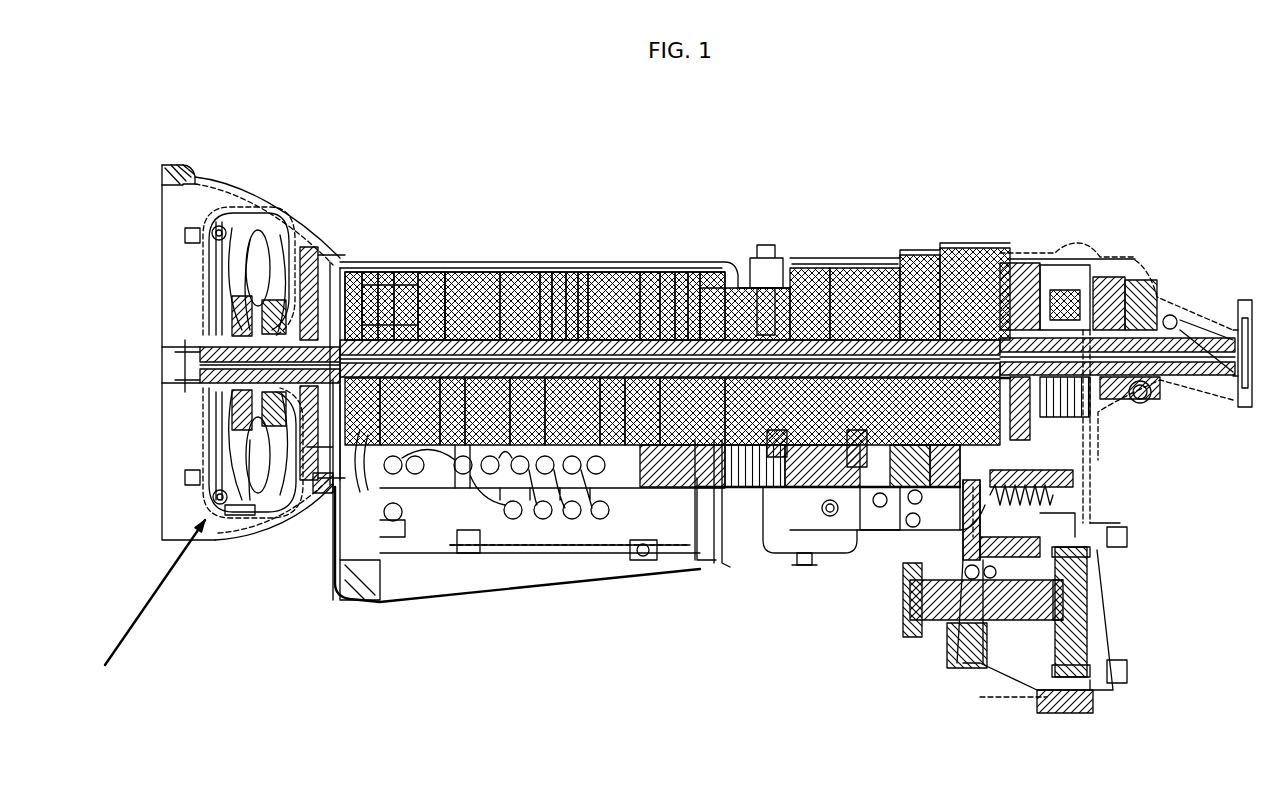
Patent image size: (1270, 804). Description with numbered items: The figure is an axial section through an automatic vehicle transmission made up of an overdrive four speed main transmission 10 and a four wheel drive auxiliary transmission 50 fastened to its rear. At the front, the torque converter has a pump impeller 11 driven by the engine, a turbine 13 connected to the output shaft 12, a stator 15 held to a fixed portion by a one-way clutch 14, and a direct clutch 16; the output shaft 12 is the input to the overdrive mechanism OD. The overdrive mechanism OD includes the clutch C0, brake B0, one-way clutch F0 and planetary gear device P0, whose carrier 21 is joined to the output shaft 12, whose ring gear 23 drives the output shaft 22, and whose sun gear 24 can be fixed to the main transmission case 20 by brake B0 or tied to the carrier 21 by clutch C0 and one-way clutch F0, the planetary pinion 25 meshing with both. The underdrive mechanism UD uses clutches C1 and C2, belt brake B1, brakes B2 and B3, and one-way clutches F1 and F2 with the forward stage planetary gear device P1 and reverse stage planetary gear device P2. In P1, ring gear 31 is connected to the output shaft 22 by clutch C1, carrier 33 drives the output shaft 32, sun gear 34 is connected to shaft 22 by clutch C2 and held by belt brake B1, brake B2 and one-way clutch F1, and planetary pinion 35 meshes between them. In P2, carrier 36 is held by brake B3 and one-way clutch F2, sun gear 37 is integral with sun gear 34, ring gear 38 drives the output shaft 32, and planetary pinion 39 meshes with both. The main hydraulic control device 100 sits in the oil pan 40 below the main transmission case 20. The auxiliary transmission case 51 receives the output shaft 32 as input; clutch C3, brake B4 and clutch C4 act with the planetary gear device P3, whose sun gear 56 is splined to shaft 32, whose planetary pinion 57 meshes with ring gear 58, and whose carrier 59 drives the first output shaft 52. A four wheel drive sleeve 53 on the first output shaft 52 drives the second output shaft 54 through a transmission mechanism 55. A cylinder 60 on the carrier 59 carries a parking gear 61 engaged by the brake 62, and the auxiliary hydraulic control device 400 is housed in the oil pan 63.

The main transmission 10 is at (271, 162).
The pump impeller 11 is at (270, 210).
The output shaft of the torque converter 12 is at (275, 520).
The turbine 13 is at (240, 206).
The one-way clutch 14 is at (220, 522).
The stator 15 is at (245, 525).
The direct clutch 16 is at (197, 212).
The overdrive mechanism OD is at (318, 225).
The underdrive mechanism UD is at (483, 265).
The planetary gear device P0 is at (345, 247).
The forward stage planetary gear device P1 is at (535, 270).
The reverse stage planetary gear device P2 is at (652, 270).
The planetary gear device P3 is at (860, 530).
The main transmission case 20 is at (590, 270).
The carrier 21 is at (380, 243).
The output shaft of the overdrive mechanism 22 is at (439, 265).
The ring gear 23 is at (420, 262).
The sun gear 24 is at (362, 240).
The planetary pinion 25 is at (395, 246).
The ring gear 31 is at (545, 270).
The output shaft 32 is at (700, 470).
The carrier 33 is at (575, 270).
The sun gear 34 is at (580, 270).
The planetary pinion 35 is at (560, 270).
The carrier 36 is at (695, 270).
The sun gear 37 is at (705, 270).
The ring gear 38 is at (665, 270).
The planetary pinion 39 is at (680, 270).
The oil pan 40 is at (405, 600).
The four wheel drive auxiliary transmission 50 is at (1073, 240).
The auxiliary transmission case 51 is at (815, 265).
The first output shaft 52 is at (1147, 300).
The four wheel drive sleeve 53 is at (1110, 290).
The second output shaft 54 is at (950, 625).
The transmission mechanism 55 is at (1095, 265).
The sun gear 56 is at (880, 530).
The planetary pinion 57 is at (890, 530).
The ring gear 58 is at (895, 525).
The carrier 59 is at (905, 530).
The cylinder 60 is at (780, 470).
The parking gear 61 is at (795, 500).
The brake 62 is at (845, 505).
The oil pan 63 is at (760, 520).
The main hydraulic control device 100 is at (565, 540).
The auxiliary hydraulic control device 400 is at (850, 525).
The multiple disk clutch C0 is at (330, 490).
The multiple disk clutch C1 is at (495, 545).
The multiple disk clutch C2 is at (427, 555).
The clutch C3 is at (845, 262).
The clutch C4 is at (998, 243).
The brake B0 is at (340, 505).
The belt brake B1 is at (452, 550).
The multiple disk brake B2 is at (585, 545).
The multiple disk brake B3 is at (620, 555).
The brake B4 is at (905, 258).
The one-way clutch F0 is at (375, 582).
The one-way clutch F1 is at (535, 545).
The one-way clutch F2 is at (590, 550).